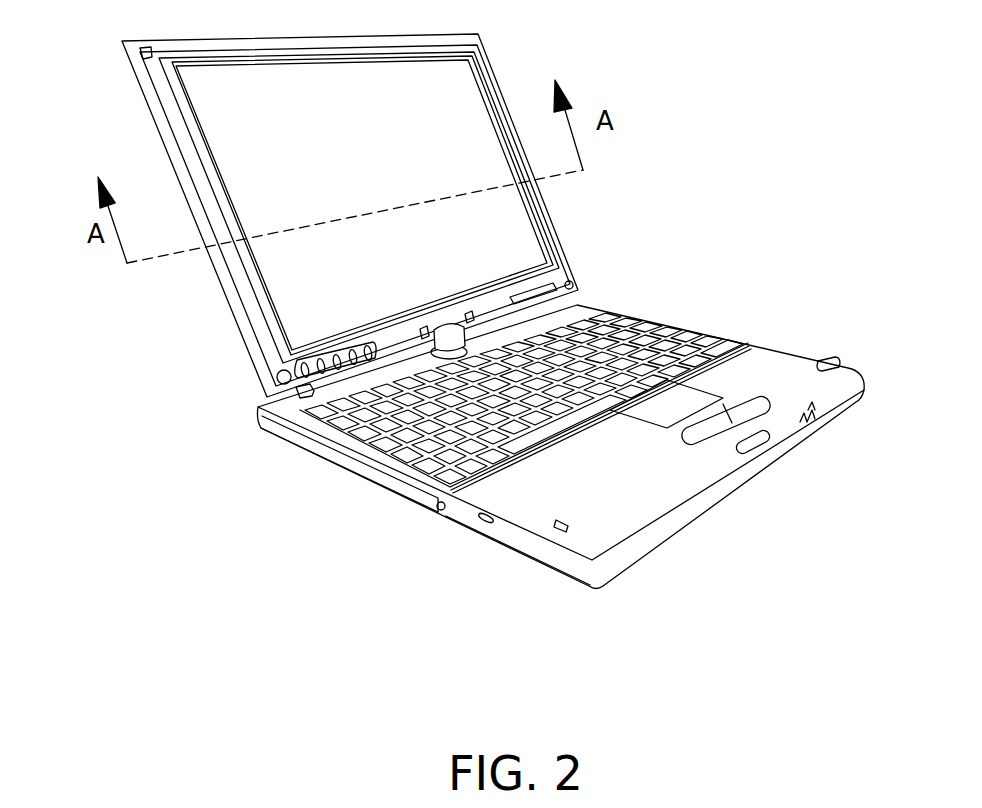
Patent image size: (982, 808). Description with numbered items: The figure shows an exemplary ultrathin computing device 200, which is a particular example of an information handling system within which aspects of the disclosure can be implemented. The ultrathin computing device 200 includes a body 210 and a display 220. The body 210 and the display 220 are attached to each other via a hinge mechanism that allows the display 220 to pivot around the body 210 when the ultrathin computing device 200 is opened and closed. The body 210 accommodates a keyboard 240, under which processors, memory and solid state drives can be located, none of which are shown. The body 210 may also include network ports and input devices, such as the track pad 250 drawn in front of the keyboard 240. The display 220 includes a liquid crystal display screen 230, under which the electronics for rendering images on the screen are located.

The ultrathin computing device 200 is at (452, 299).
The body 210 is at (647, 323).
The display 220 is at (309, 208).
The liquid crystal display (LCD) screen 230 is at (445, 122).
The keyboard 240 is at (352, 438).
The track pad 250 is at (677, 402).